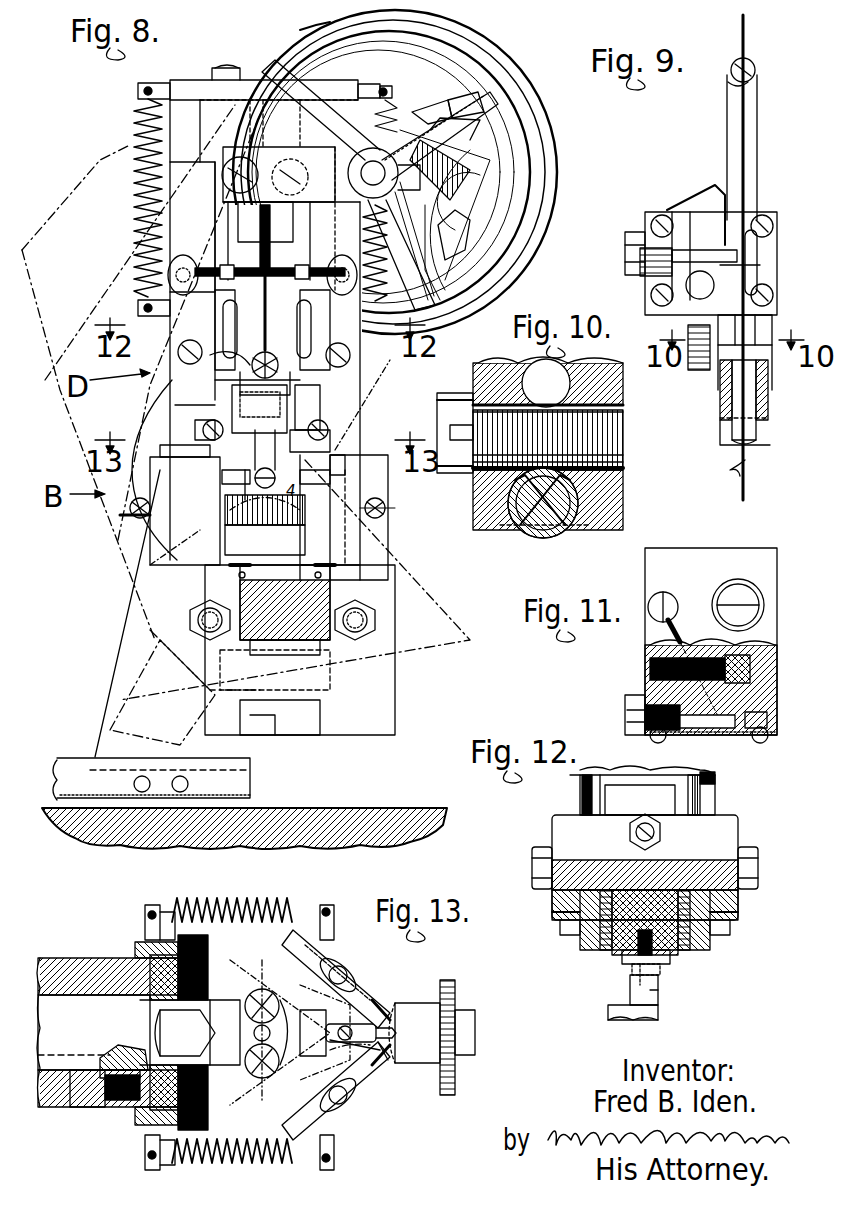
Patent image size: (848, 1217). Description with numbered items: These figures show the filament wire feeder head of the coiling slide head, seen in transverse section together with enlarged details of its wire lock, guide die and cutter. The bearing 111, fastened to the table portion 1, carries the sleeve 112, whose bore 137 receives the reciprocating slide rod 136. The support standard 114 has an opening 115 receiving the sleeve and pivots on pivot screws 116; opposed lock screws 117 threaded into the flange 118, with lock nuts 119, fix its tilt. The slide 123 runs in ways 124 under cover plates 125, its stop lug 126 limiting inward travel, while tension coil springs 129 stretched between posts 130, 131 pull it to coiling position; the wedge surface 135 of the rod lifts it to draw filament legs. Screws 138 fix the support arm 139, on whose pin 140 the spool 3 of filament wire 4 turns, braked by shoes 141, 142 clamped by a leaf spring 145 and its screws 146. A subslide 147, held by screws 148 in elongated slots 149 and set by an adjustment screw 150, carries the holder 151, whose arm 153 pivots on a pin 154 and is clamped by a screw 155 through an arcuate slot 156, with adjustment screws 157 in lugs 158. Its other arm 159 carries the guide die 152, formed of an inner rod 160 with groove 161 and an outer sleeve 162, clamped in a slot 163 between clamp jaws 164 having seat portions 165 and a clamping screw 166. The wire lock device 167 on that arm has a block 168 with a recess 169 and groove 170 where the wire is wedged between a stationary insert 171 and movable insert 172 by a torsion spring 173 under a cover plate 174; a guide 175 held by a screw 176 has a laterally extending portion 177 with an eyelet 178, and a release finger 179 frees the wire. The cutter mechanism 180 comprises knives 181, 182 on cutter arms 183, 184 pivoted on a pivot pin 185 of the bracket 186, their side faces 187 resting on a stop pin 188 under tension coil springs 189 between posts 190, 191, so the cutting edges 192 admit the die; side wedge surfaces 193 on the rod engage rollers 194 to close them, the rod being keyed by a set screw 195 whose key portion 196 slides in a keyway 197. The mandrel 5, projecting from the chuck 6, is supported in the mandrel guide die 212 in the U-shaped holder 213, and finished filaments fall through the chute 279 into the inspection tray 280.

In FIG. 8, the table portion 1 is at (425, 808).
In FIG. 8, the spool 3 is at (300, 44).
In FIG. 8, the filament wire 4 is at (538, 170).
In FIG. 9, the filament wire 4 is at (748, 482).
In FIG. 8, the mandrel 5 is at (241, 485).
In FIG. 9, the mandrel 5 is at (735, 468).
In FIG. 13, the mandrel 5 is at (386, 1064).
In FIG. 13, the filament wire gripper or chuck 6 is at (428, 1003).
In FIG. 8, the bearing 111 is at (115, 633).
In FIG. 8, the sleeve or spindle 112 is at (250, 410).
In FIG. 12, the sleeve or spindle 112 is at (718, 775).
In FIG. 13, the sleeve or spindle 112 is at (62, 958).
In FIG. 8, the support standard 114 is at (170, 410).
In FIG. 12, the support standard 114 is at (563, 860).
In FIG. 13, the support standard 114 is at (150, 958).
In FIG. 8, the opening 115 is at (195, 430).
In FIG. 13, the opening 115 is at (135, 948).
In FIG. 12, the pivot screws 116 is at (535, 864).
In FIG. 13, the pivot screws 116 is at (190, 912).
In FIG. 12, the lock screws 117 is at (630, 831).
In FIG. 12, the flange 118 is at (725, 832).
In FIG. 12, the lock nuts 119 is at (660, 832).
In FIG. 8, the slide 123 is at (200, 118).
In FIG. 12, the slide 123 is at (580, 905).
In FIG. 12, the ways 124 is at (598, 935).
In FIG. 8, the cover plates 125 is at (228, 225).
In FIG. 12, the cover plates 125 is at (552, 916).
In FIG. 8, the stop lug 126 is at (200, 80).
In FIG. 8, the tension coil springs 129 is at (140, 112).
In FIG. 8, the posts 130 is at (140, 302).
In FIG. 8, the posts 131 is at (138, 90).
In FIG. 13, the wedge surface 135 is at (175, 1030).
In FIG. 13, the slide rod 136 is at (85, 1003).
In FIG. 13, the bore 137 is at (78, 1108).
In FIG. 8, the screws 138 is at (240, 162).
In FIG. 8, the support arm 139 is at (258, 140).
In FIG. 8, the pin 140 is at (370, 185).
In FIG. 8, the shoe 141 is at (432, 110).
In FIG. 8, the shoe 142 is at (462, 108).
In FIG. 8, the leaf spring 145 is at (470, 255).
In FIG. 8, the screws 146 is at (462, 240).
In FIG. 8, the subslide 147 is at (218, 300).
In FIG. 12, the subslide 147 is at (662, 960).
In FIG. 8, the screws 148 is at (230, 322).
In FIG. 12, the screws 148 is at (608, 950).
In FIG. 8, the elongated slots 149 is at (274, 322).
In FIG. 8, the adjustment screw 150 is at (258, 230).
In FIG. 10, the holder 151 is at (473, 392).
In FIG. 12, the holder 151 is at (630, 999).
In FIG. 8, the guide die 152 is at (281, 471).
In FIG. 9, the guide die 152 is at (727, 427).
In FIG. 10, the guide die 152 is at (532, 545).
In FIG. 8, the holder arm 153 is at (186, 352).
In FIG. 12, the holder arm 153 is at (625, 962).
In FIG. 8, the pin 154 is at (245, 390).
In FIG. 8, the screw 155 is at (222, 365).
In FIG. 12, the screw 155 is at (632, 975).
In FIG. 8, the arcuate slot 156 is at (305, 395).
In FIG. 12, the arcuate slot 156 is at (662, 975).
In FIG. 8, the adjustment screws 157 is at (185, 262).
In FIG. 8, the lugs 158 is at (236, 262).
In FIG. 8, the holder arm 159 is at (318, 415).
In FIG. 10, the holder arm 159 is at (608, 400).
In FIG. 12, the holder arm 159 is at (658, 1000).
In FIG. 9, the inner rod 160 is at (724, 440).
In FIG. 10, the inner rod 160 is at (570, 530).
In FIG. 9, the groove 161 is at (752, 428).
In FIG. 10, the groove 161 is at (550, 540).
In FIG. 9, the outer sleeve 162 is at (756, 410).
In FIG. 10, the outer sleeve 162 is at (525, 525).
In FIG. 10, the slot 163 is at (556, 405).
In FIG. 9, the clamp jaws 164 is at (718, 380).
In FIG. 10, the clamp jaws 164 is at (473, 500).
In FIG. 9, the seat portions 165 is at (720, 395).
In FIG. 10, the seat portions 165 is at (512, 520).
In FIG. 9, the clamping screw 166 is at (688, 370).
In FIG. 10, the clamping screw 166 is at (620, 444).
In FIG. 8, the wire lock device 167 is at (215, 392).
In FIG. 9, the wire lock device 167 is at (645, 222).
In FIG. 11, the wire lock device 167 is at (645, 688).
In FIG. 9, the block 168 is at (690, 212).
In FIG. 11, the block 168 is at (772, 688).
In FIG. 9, the recess 169 is at (755, 273).
In FIG. 11, the recess 169 is at (707, 735).
In FIG. 9, the groove 170 is at (745, 330).
In FIG. 9, the stationary insert 171 is at (757, 252).
In FIG. 11, the stationary insert 171 is at (752, 735).
In FIG. 9, the movable insert 172 is at (700, 252).
In FIG. 11, the movable insert 172 is at (735, 735).
In FIG. 9, the torsion spring 173 is at (640, 292).
In FIG. 11, the cover plate 174 is at (683, 735).
In FIG. 9, the guide 175 is at (728, 128).
In FIG. 11, the guide 175 is at (752, 665).
In FIG. 11, the screw 176 is at (650, 665).
In FIG. 9, the laterally extending portion 177 is at (756, 71).
In FIG. 9, the eyelet 178 is at (730, 80).
In FIG. 9, the release finger 179 is at (712, 185).
In FIG. 11, the release finger 179 is at (668, 632).
In FIG. 8, the cutter mechanism 180 is at (380, 428).
In FIG. 13, the cutter mechanism 180 is at (372, 1105).
In FIG. 8, the knife 181 is at (222, 468).
In FIG. 13, the knife 181 is at (378, 1072).
In FIG. 8, the knife 182 is at (325, 470).
In FIG. 13, the knife 182 is at (375, 1000).
In FIG. 8, the cutter arm 183 is at (170, 540).
In FIG. 13, the cutter arm 183 is at (348, 1112).
In FIG. 8, the cutter arm 184 is at (345, 550).
In FIG. 13, the cutter arm 184 is at (348, 958).
In FIG. 13, the pivot pin 185 is at (303, 1049).
In FIG. 8, the bracket 186 is at (305, 660).
In FIG. 13, the bracket 186 is at (262, 975).
In FIG. 13, the side faces 187 is at (230, 1032).
In FIG. 13, the stop pin 188 is at (254, 1030).
In FIG. 8, the tension coil springs 189 is at (140, 520).
In FIG. 13, the tension coil springs 189 is at (255, 900).
In FIG. 8, the posts 190 is at (130, 510).
In FIG. 13, the posts 190 is at (334, 928).
In FIG. 13, the posts 191 is at (150, 905).
In FIG. 8, the cutting edges 192 is at (222, 478).
In FIG. 13, the cutting edges 192 is at (390, 1030).
In FIG. 13, the side wedge surfaces 193 is at (175, 1032).
In FIG. 13, the rollers 194 is at (245, 1000).
In FIG. 13, the set screw 195 is at (120, 1100).
In FIG. 13, the key portion 196 is at (115, 1050).
In FIG. 13, the keyway 197 is at (98, 1075).
In FIG. 8, the mandrel guide die 212 is at (262, 512).
In FIG. 13, the mandrel guide die 212 is at (356, 1059).
In FIG. 8, the U-shaped holder 213 is at (350, 400).
In FIG. 13, the U-shaped holder 213 is at (365, 975).
In FIG. 8, the chute 279 is at (135, 678).
In FIG. 8, the inspection tray 280 is at (110, 757).